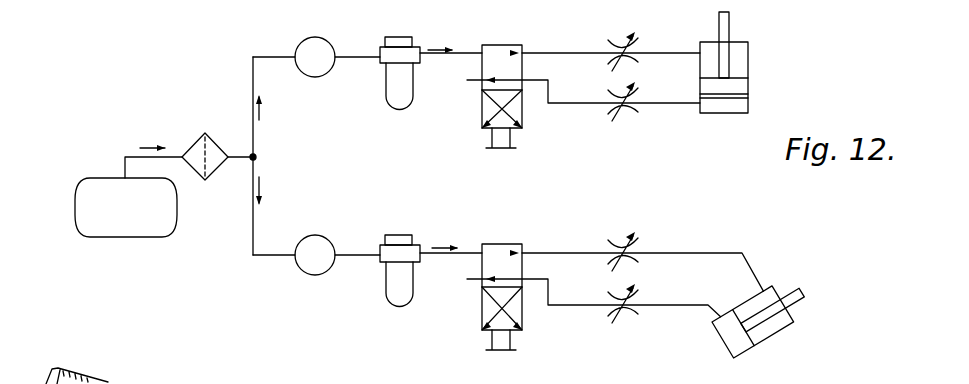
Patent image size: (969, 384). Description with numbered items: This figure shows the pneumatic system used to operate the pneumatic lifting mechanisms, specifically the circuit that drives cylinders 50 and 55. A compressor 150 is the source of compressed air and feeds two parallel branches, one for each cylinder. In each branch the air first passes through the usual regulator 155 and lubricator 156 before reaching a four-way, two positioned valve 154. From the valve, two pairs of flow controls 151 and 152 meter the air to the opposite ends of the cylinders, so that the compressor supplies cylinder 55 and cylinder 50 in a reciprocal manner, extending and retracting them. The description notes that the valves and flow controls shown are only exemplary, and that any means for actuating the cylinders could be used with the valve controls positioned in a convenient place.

The compressor 150 is at (158, 229).
The regulator 155 is at (303, 41).
The lubricator 156 is at (425, 27).
The four-way, two positioned valve 154 is at (522, 45).
The flow control 151 is at (645, 45).
The flow control 152 is at (640, 109).
The cylinder 55 is at (750, 71).
The cylinder 50 is at (776, 330).